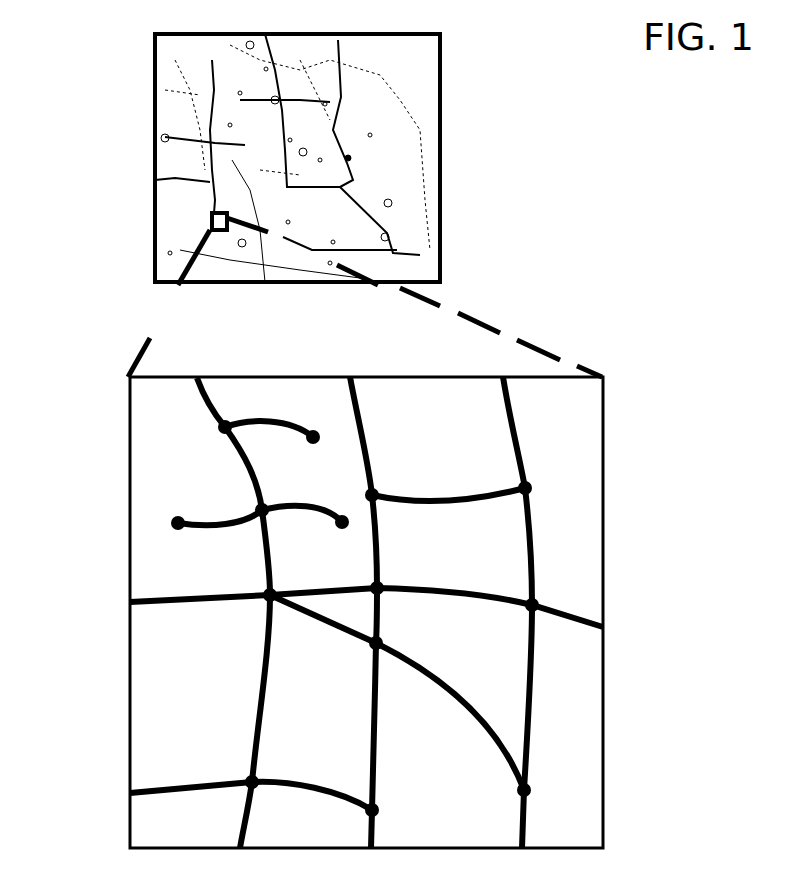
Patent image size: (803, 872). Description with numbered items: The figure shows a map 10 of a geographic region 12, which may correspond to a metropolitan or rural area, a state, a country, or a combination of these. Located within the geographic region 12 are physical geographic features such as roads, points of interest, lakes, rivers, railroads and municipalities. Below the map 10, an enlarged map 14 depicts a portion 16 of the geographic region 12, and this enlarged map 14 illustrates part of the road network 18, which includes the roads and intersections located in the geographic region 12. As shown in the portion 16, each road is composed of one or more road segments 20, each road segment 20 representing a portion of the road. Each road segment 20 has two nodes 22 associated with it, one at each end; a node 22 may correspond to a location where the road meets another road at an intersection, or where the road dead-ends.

The map 10 is at (145, 182).
The geographic region 12 is at (401, 65).
The enlarged map 14 is at (607, 428).
The portion 16 is at (454, 820).
The road network 18 is at (204, 617).
The road segment 20 is at (212, 530).
The node 22 is at (175, 507).